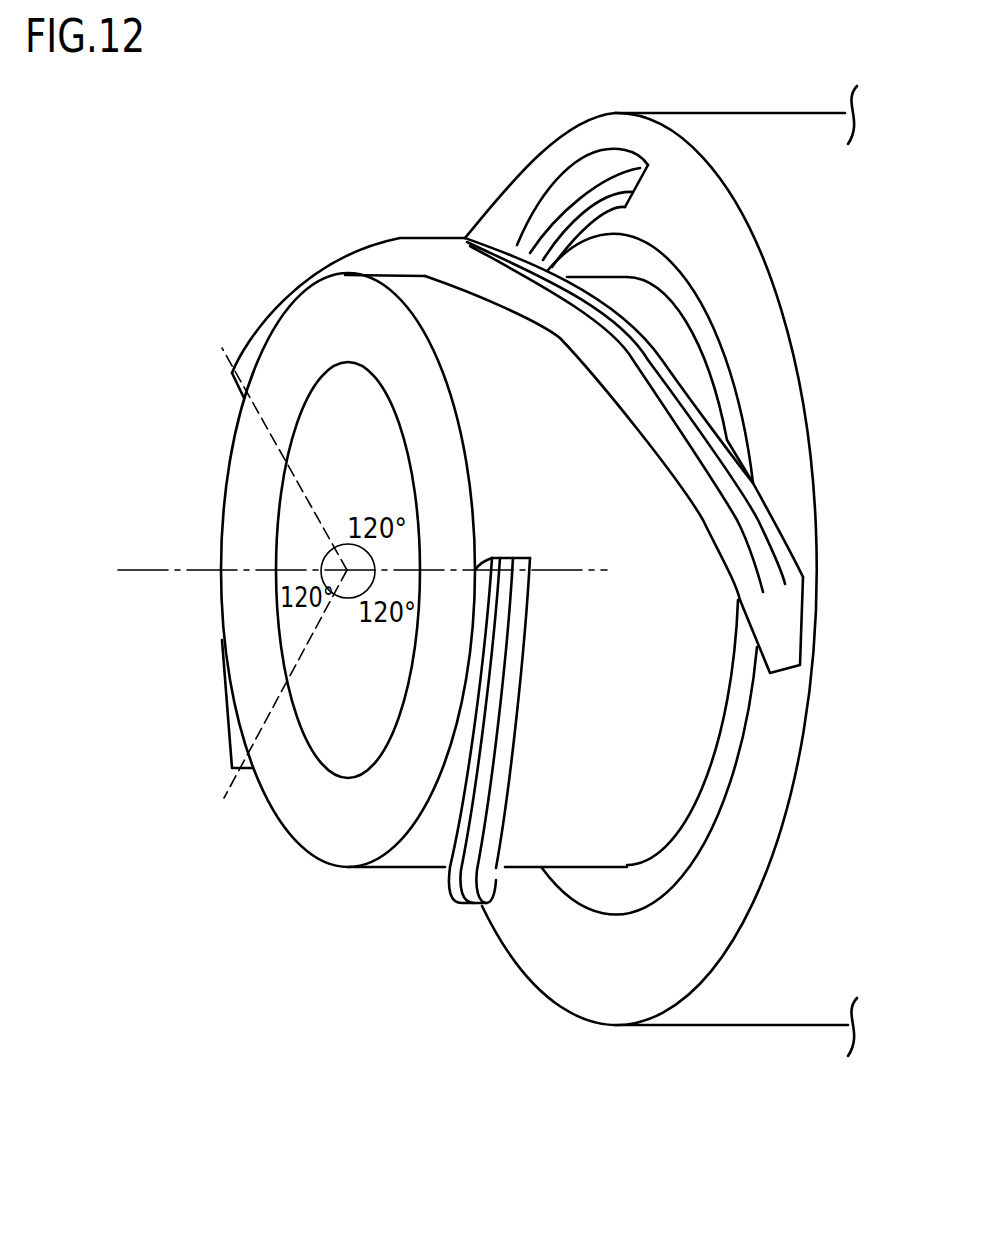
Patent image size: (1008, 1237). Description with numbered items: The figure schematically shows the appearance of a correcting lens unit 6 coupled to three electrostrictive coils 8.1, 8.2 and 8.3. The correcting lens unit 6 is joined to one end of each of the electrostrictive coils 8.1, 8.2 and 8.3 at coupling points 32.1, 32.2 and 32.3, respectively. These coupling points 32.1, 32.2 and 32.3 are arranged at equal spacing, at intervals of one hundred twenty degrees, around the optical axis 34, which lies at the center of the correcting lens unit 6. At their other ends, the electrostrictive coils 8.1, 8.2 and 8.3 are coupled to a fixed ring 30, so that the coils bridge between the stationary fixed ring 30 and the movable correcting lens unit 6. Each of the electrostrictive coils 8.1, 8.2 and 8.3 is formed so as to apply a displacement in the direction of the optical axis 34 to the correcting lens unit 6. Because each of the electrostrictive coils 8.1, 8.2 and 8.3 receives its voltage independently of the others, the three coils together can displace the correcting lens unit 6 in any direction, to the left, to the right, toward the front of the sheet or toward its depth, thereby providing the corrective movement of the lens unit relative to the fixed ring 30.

The correcting lens unit 6 is at (413, 843).
The electrostrictive coil 8.1 is at (513, 748).
The electrostrictive coil 8.2 is at (680, 454).
The electrostrictive coil 8.3 is at (493, 228).
The fixed ring 30 is at (735, 283).
The coupling point 32.1 is at (475, 570).
The coupling point 32.2 is at (244, 398).
The coupling point 32.3 is at (243, 773).
The optical axis 34 is at (165, 569).